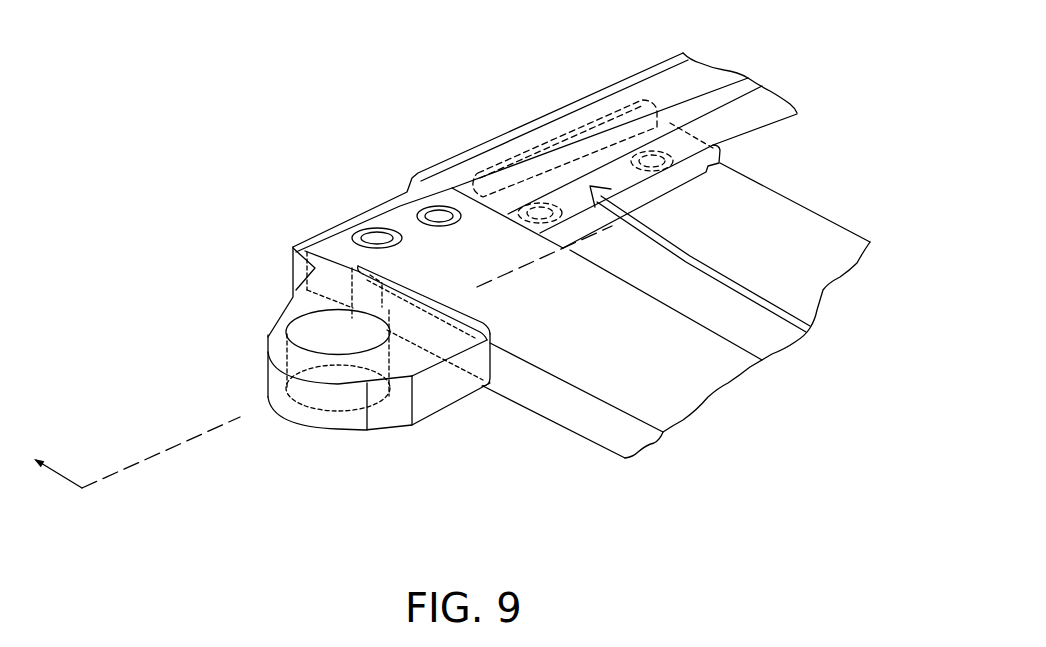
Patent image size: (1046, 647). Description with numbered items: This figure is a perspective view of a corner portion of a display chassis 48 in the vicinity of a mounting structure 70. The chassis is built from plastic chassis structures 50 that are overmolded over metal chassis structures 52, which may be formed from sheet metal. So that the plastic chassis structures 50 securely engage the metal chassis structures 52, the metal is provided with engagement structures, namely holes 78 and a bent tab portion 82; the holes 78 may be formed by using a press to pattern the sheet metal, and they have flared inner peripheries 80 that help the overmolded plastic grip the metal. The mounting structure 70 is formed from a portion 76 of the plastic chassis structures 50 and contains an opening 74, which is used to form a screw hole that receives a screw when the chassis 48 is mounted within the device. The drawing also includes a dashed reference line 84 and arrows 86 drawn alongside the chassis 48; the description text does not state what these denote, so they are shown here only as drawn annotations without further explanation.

The chassis 48 is at (178, 161).
The plastic chassis structures 50 is at (556, 108).
The metal chassis structures 52 is at (614, 436).
The mounting structure 70 is at (222, 356).
The opening 74 is at (313, 342).
The portion 76 is at (298, 416).
The holes 78 is at (442, 206).
The inner peripheries 80 is at (376, 235).
The bent tab portion 82 is at (618, 120).
The axis 84 is at (143, 461).
The direction arrow 86 is at (60, 474).